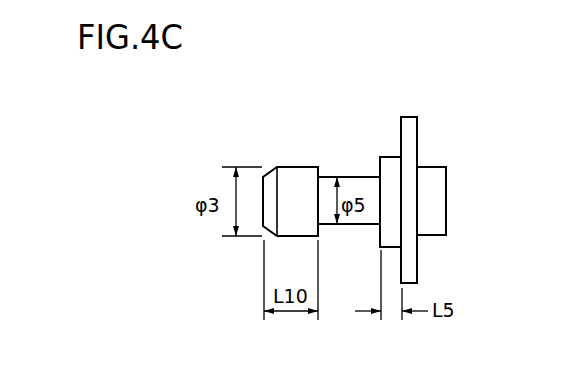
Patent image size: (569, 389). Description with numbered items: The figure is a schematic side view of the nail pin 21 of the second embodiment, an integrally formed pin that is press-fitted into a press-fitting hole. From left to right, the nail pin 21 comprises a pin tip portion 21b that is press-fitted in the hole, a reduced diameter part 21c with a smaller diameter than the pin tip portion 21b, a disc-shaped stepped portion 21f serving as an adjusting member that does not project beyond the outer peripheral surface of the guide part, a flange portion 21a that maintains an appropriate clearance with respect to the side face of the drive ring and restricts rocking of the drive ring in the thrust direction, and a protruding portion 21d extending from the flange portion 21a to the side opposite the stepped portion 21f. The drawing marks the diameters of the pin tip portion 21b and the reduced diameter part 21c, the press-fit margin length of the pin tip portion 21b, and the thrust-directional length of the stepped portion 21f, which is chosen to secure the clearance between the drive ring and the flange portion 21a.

The nail pin 21 is at (444, 71).
The flange portion 21a is at (417, 138).
The pin tip portion 21b is at (287, 166).
The reduced diameter part 21c is at (328, 175).
The protruding portion 21d is at (446, 185).
The stepped portion 21f is at (387, 156).